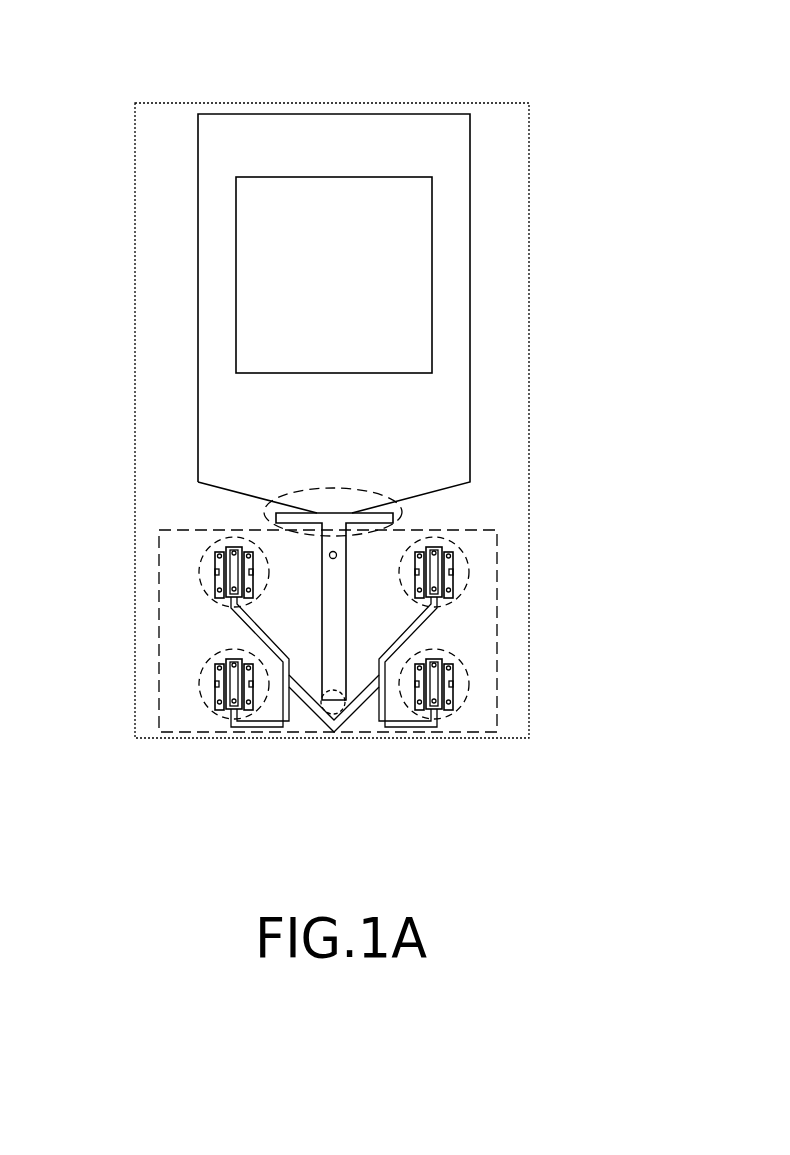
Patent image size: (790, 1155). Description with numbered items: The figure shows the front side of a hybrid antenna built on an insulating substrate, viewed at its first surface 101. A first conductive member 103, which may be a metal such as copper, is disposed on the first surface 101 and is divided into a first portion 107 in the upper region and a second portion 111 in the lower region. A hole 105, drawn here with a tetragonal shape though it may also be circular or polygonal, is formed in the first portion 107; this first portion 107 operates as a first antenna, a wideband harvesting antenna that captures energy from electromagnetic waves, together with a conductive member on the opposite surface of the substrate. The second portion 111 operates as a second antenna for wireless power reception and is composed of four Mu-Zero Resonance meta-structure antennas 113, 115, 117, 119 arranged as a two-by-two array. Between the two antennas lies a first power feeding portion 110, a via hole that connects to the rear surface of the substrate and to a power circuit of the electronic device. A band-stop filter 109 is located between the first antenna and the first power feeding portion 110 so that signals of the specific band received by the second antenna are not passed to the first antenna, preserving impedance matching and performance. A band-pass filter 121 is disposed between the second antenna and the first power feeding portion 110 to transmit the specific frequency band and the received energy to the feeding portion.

The first surface 101 is at (509, 158).
The first conductive member 103 is at (337, 114).
The hole 105 is at (403, 273).
The first portion 107 is at (220, 276).
The band-stop filter 109 is at (403, 513).
The first power feeding portion 110 is at (329, 555).
The second portion 111 is at (158, 631).
The meta-structure antenna 113 is at (220, 598).
The meta-structure antenna 115 is at (216, 710).
The meta-structure antenna 117 is at (469, 688).
The meta-structure antenna 119 is at (469, 572).
The band-pass filter 121 is at (333, 733).